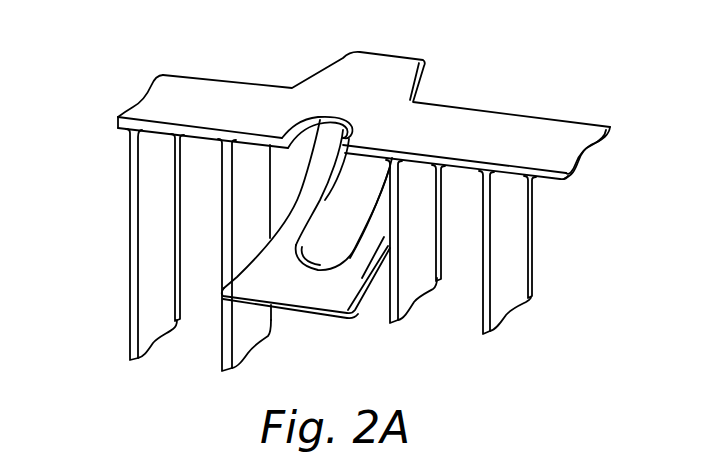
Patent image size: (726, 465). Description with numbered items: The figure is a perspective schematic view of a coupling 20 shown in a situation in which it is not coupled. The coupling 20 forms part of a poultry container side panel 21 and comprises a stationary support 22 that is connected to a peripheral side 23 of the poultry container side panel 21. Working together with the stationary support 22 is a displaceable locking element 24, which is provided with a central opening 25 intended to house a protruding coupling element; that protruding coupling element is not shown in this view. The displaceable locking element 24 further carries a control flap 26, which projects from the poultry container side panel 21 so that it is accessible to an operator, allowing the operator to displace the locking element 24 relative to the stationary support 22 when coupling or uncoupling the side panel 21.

The coupling 20 is at (329, 197).
The poultry container side panel 21 is at (113, 152).
The stationary support 22 is at (335, 118).
The peripheral side 23 is at (510, 138).
The displaceable locking element 24 is at (377, 238).
The central opening 25 is at (342, 222).
The control flap 26 is at (307, 290).